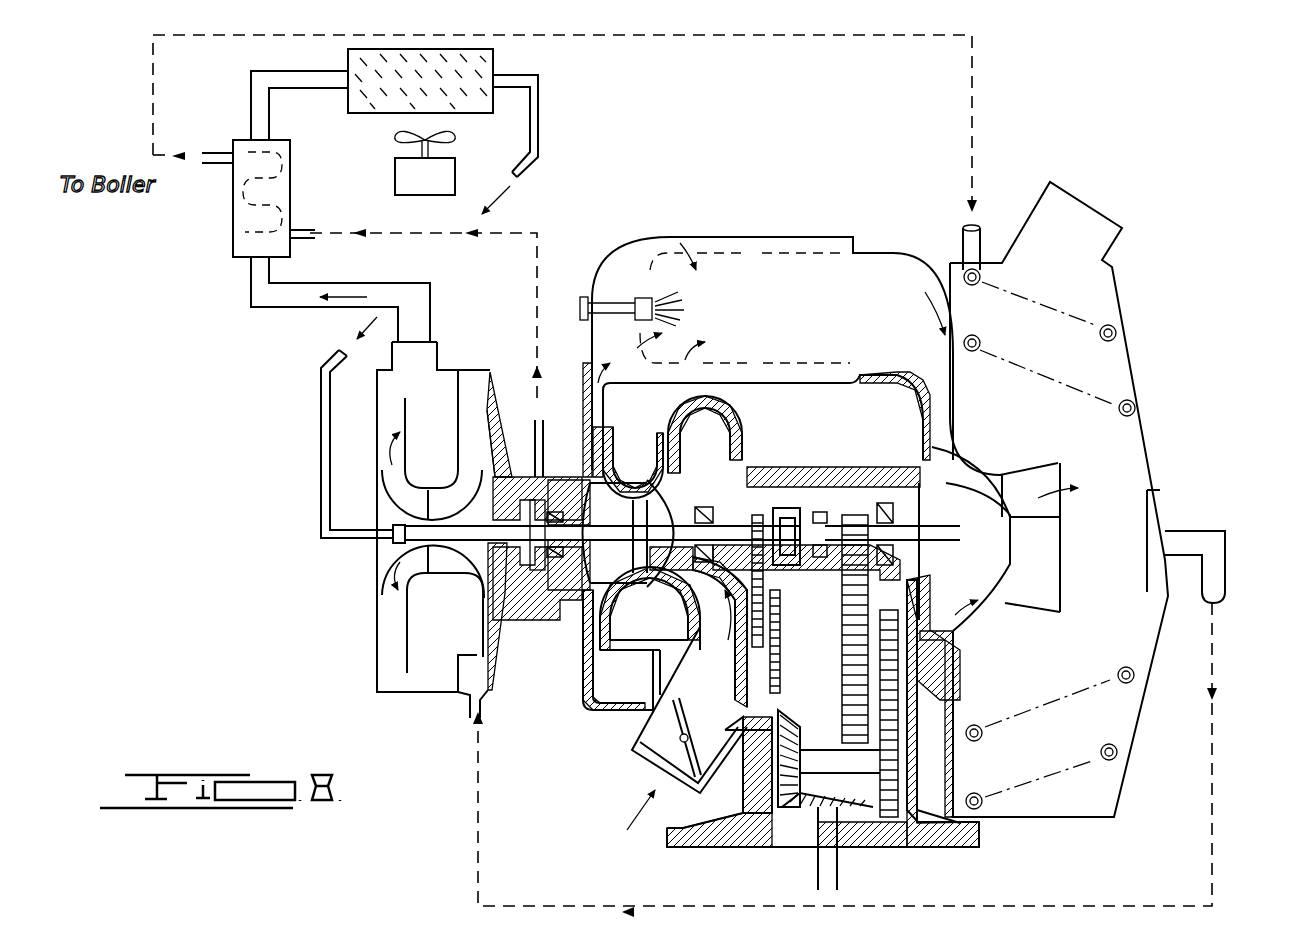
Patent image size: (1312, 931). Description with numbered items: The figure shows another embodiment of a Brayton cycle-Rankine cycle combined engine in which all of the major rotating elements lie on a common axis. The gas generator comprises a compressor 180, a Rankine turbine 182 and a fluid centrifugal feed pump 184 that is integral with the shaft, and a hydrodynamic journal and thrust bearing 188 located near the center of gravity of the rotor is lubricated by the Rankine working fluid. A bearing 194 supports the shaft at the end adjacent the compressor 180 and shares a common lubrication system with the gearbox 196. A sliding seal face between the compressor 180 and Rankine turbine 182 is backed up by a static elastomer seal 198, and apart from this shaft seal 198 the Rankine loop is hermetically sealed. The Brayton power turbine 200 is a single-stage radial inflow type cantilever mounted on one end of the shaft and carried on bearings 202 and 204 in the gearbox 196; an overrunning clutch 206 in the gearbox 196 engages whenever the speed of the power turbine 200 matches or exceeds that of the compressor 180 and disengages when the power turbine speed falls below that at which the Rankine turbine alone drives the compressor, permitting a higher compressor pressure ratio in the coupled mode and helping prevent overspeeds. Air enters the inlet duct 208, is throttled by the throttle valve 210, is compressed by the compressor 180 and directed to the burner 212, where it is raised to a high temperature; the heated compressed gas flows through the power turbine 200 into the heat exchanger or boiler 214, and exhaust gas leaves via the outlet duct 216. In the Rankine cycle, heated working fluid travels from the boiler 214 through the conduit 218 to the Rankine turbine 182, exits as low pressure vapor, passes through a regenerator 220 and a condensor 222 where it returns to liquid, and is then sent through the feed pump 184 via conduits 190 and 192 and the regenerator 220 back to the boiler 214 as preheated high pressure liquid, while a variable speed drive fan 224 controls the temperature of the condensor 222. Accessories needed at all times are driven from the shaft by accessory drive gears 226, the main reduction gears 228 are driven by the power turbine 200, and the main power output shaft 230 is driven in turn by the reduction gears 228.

The compressor 180 is at (479, 530).
The Rankine turbine 182 is at (472, 550).
The fluid centrifugal feed pump 184 is at (515, 475).
The hydrodynamic journal and thrust bearing 188 is at (578, 587).
The conduit 190 is at (540, 120).
The conduit 192 is at (306, 233).
The bearing 194 is at (703, 507).
The gearbox 196 is at (845, 656).
The static elastomer seal 198 is at (620, 477).
The Brayton power turbine 200 is at (950, 500).
The bearing 202 is at (880, 513).
The bearing 204 is at (808, 518).
The overrunning clutch 206 is at (818, 510).
The inlet duct 208 is at (643, 733).
The throttle valve 210 is at (687, 713).
The burner 212 is at (840, 309).
The heat exchanger (boiler) 214 is at (1125, 455).
The outlet duct 216 is at (1045, 188).
The conduit 218 is at (1226, 552).
The regenerator (recuperator) 220 is at (233, 224).
The condensor 222 is at (350, 108).
The variable speed drive fan 224 is at (395, 177).
The accessory drive gears 226 is at (765, 622).
The main reduction gears 228 is at (875, 693).
The main power output shaft 230 is at (833, 871).